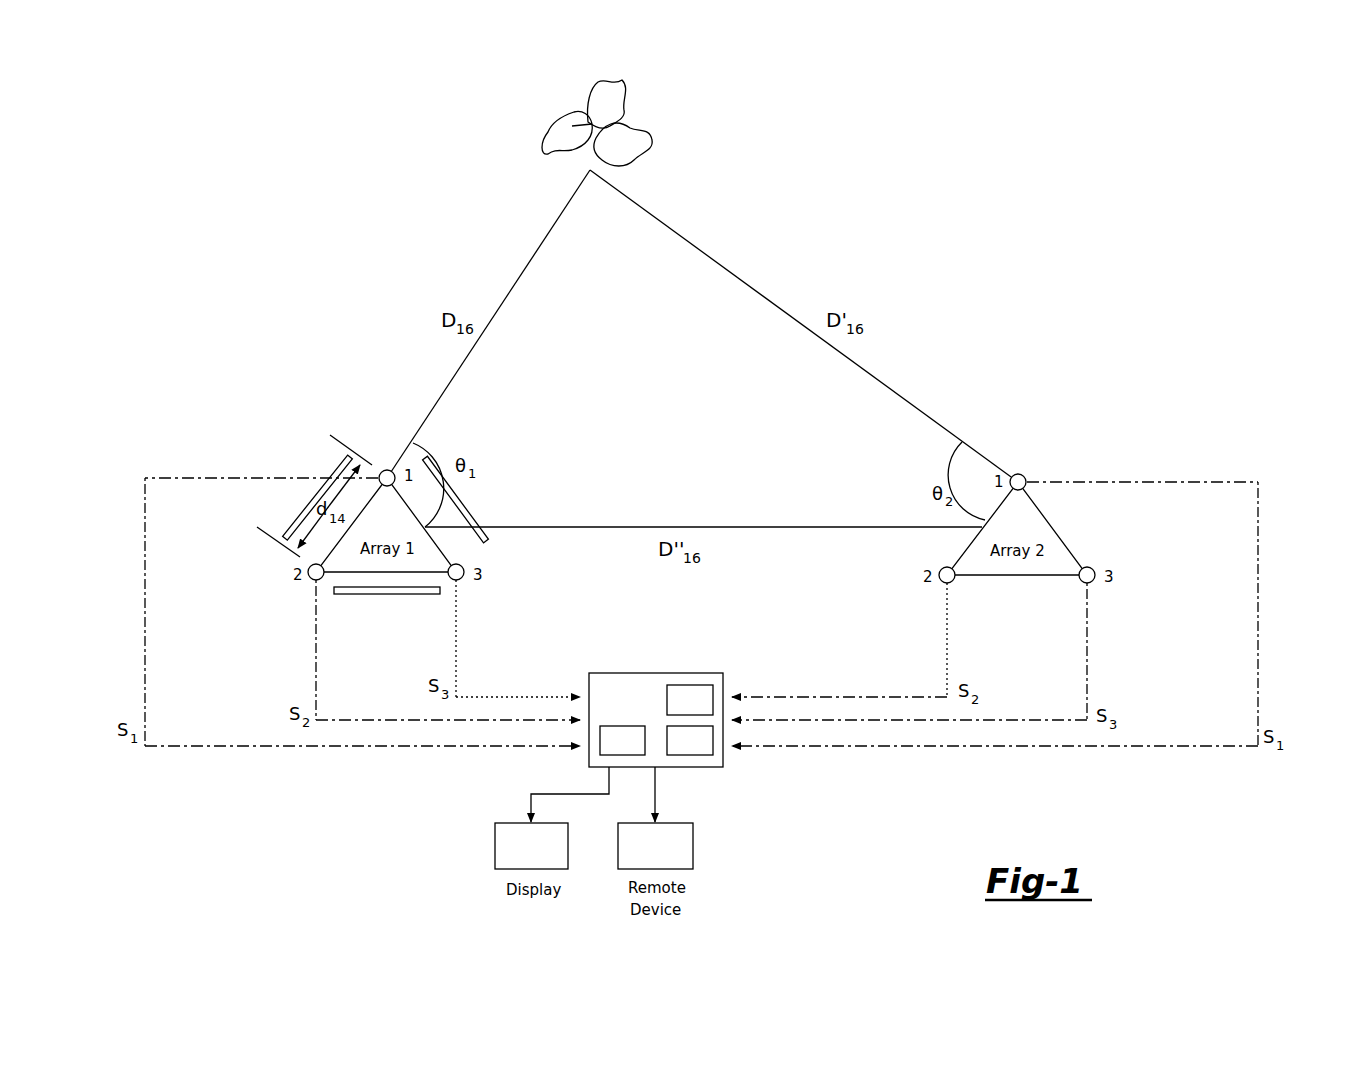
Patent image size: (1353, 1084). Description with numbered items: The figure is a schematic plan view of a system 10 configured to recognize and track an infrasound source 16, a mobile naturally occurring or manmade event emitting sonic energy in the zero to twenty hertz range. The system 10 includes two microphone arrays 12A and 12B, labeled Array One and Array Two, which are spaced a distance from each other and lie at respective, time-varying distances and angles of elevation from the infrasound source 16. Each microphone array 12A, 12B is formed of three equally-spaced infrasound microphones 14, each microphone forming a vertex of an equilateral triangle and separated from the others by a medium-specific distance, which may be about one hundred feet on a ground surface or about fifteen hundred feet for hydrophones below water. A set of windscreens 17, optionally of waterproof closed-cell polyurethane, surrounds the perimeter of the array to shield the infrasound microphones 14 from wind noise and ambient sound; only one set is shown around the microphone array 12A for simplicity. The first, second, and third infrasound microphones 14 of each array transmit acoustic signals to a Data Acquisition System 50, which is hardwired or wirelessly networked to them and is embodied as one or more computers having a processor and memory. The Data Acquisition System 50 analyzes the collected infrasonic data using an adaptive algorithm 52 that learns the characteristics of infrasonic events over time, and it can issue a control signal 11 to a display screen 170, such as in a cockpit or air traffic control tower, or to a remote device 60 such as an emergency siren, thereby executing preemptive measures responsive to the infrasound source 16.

The system 10 is at (921, 284).
The infrasound source 16 is at (662, 116).
The microphone array 12A is at (364, 620).
The microphone array 12B is at (1032, 593).
The infrasound microphone 14 is at (381, 471).
The windscreen 17 is at (297, 519).
The Data Acquisition System (DAS) 50 is at (655, 672).
The adaptive algorithm or method 52 is at (690, 700).
The control signal 11 is at (608, 785).
The display screen 170 is at (546, 858).
The remote device 60 is at (667, 858).